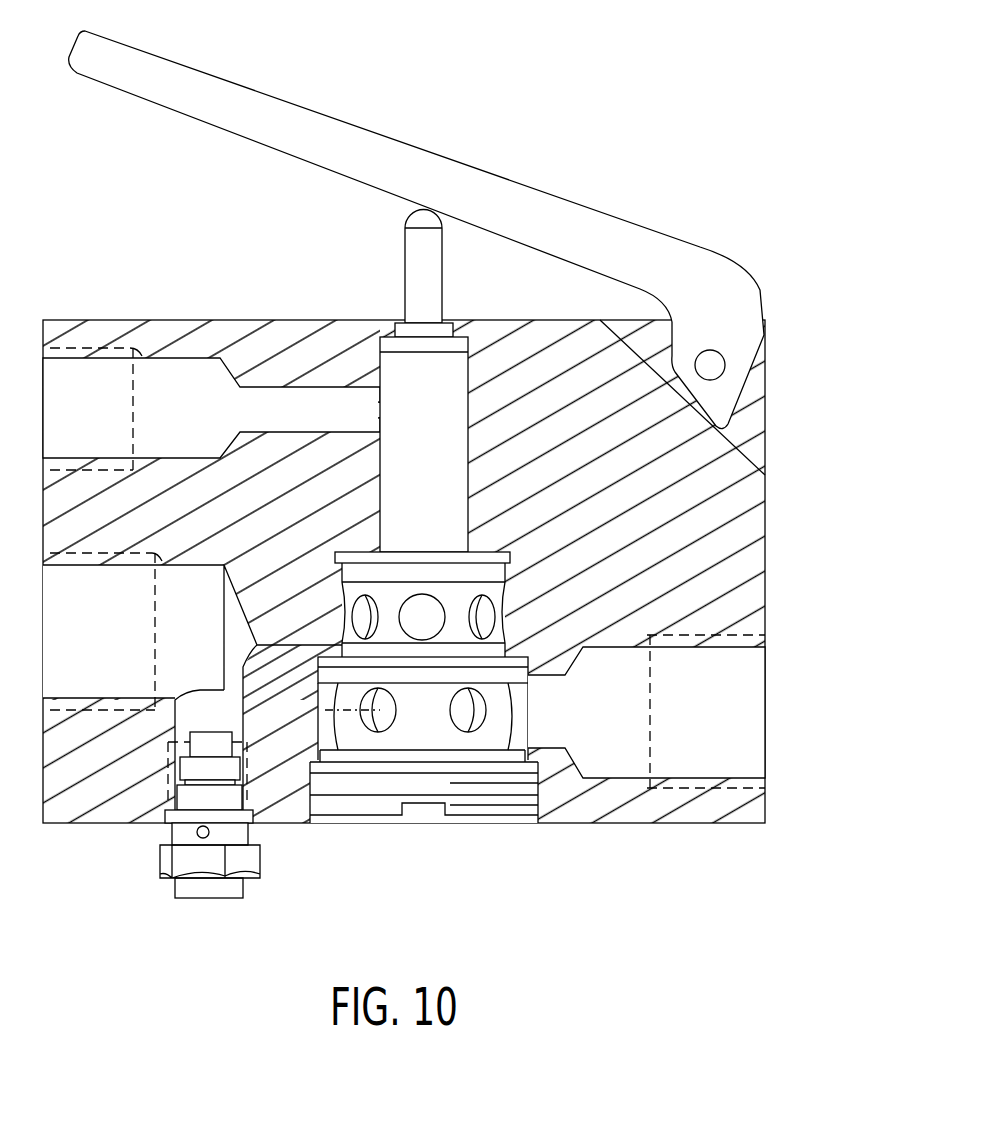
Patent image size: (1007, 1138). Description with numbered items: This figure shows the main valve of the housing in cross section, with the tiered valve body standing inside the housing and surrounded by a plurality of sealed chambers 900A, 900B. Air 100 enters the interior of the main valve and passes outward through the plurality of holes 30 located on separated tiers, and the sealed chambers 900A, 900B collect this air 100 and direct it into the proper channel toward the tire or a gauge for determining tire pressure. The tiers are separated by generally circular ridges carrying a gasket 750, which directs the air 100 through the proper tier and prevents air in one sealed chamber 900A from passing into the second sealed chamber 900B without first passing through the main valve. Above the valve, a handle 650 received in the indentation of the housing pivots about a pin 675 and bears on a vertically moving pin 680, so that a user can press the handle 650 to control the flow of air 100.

The handle 650 is at (462, 230).
The vertically moving pin 680 is at (423, 262).
The pin 675 is at (713, 365).
The sealed chamber 900A is at (505, 613).
The sealed chamber 900B is at (406, 789).
The gasket 750 is at (583, 650).
The air flow 100 is at (350, 710).
The holes 30 is at (463, 712).